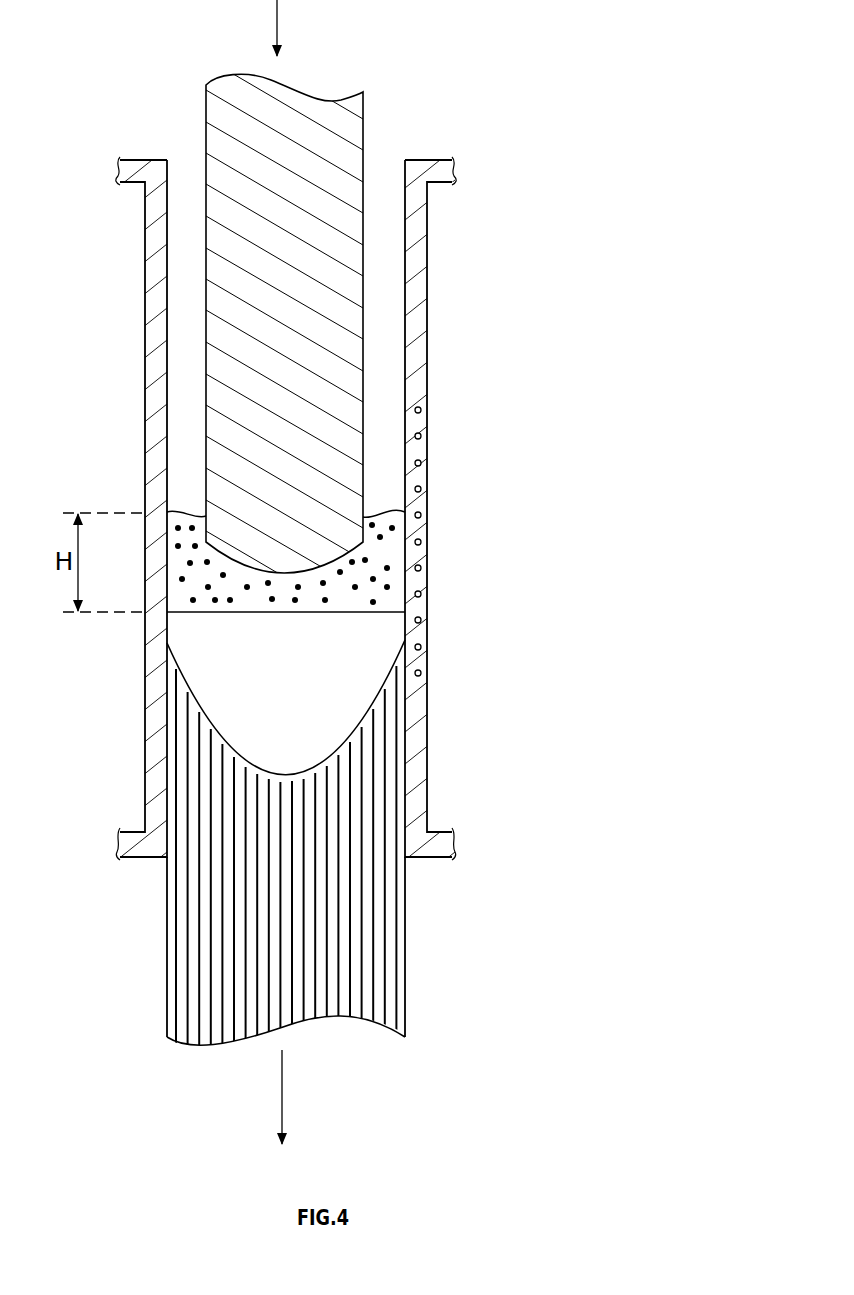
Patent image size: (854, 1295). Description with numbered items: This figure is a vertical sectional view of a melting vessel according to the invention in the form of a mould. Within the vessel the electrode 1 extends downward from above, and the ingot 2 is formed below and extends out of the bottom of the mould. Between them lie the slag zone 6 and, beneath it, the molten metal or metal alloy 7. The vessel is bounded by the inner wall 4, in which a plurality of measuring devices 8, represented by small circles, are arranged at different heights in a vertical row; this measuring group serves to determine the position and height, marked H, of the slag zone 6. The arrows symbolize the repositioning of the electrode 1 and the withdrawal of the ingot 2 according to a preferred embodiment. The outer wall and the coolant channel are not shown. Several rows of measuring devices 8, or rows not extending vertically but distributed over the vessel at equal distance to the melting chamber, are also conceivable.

The electrode 1 is at (368, 144).
The ingot 2 is at (414, 942).
The inner wall 4 is at (429, 252).
The slag zone 6 is at (380, 550).
The molten metal or metal alloy 7 is at (339, 671).
The measuring devices 8 is at (425, 402).